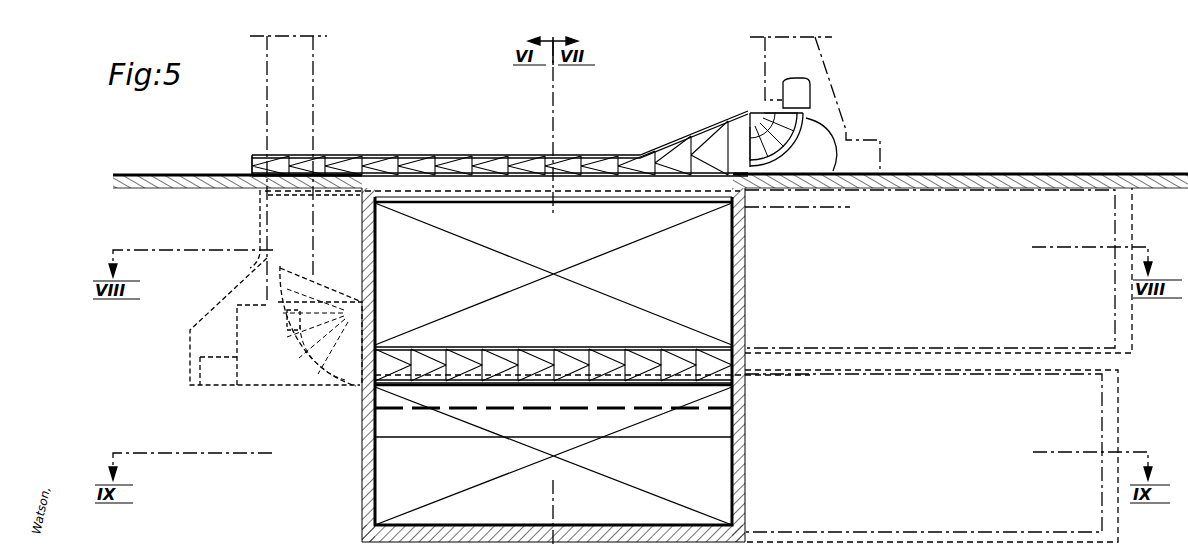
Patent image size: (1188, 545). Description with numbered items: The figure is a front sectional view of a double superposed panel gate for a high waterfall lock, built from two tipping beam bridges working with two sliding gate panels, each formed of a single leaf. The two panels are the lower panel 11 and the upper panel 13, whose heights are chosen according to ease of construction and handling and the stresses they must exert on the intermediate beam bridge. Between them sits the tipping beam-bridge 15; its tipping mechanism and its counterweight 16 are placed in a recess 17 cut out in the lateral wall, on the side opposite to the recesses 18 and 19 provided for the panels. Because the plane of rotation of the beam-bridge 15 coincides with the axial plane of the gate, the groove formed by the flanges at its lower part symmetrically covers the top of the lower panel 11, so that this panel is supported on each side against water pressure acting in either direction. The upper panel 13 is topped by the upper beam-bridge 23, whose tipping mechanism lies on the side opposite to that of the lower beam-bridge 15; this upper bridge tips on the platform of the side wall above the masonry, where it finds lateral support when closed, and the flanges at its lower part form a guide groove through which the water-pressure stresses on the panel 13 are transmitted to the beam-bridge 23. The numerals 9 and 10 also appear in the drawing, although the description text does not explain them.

The upper sector gate 9 is at (805, 123).
The lock structure 10 is at (378, 486).
The lower panel 11 is at (710, 428).
The upper panel 13 is at (708, 258).
The tipping beam-bridge 15 is at (738, 345).
The counterweight 16 is at (320, 365).
The recess 17 is at (218, 328).
The recess for panel 18 is at (1083, 425).
The recess for panel 19 is at (1095, 318).
The upper beam-bridge 23 is at (457, 170).